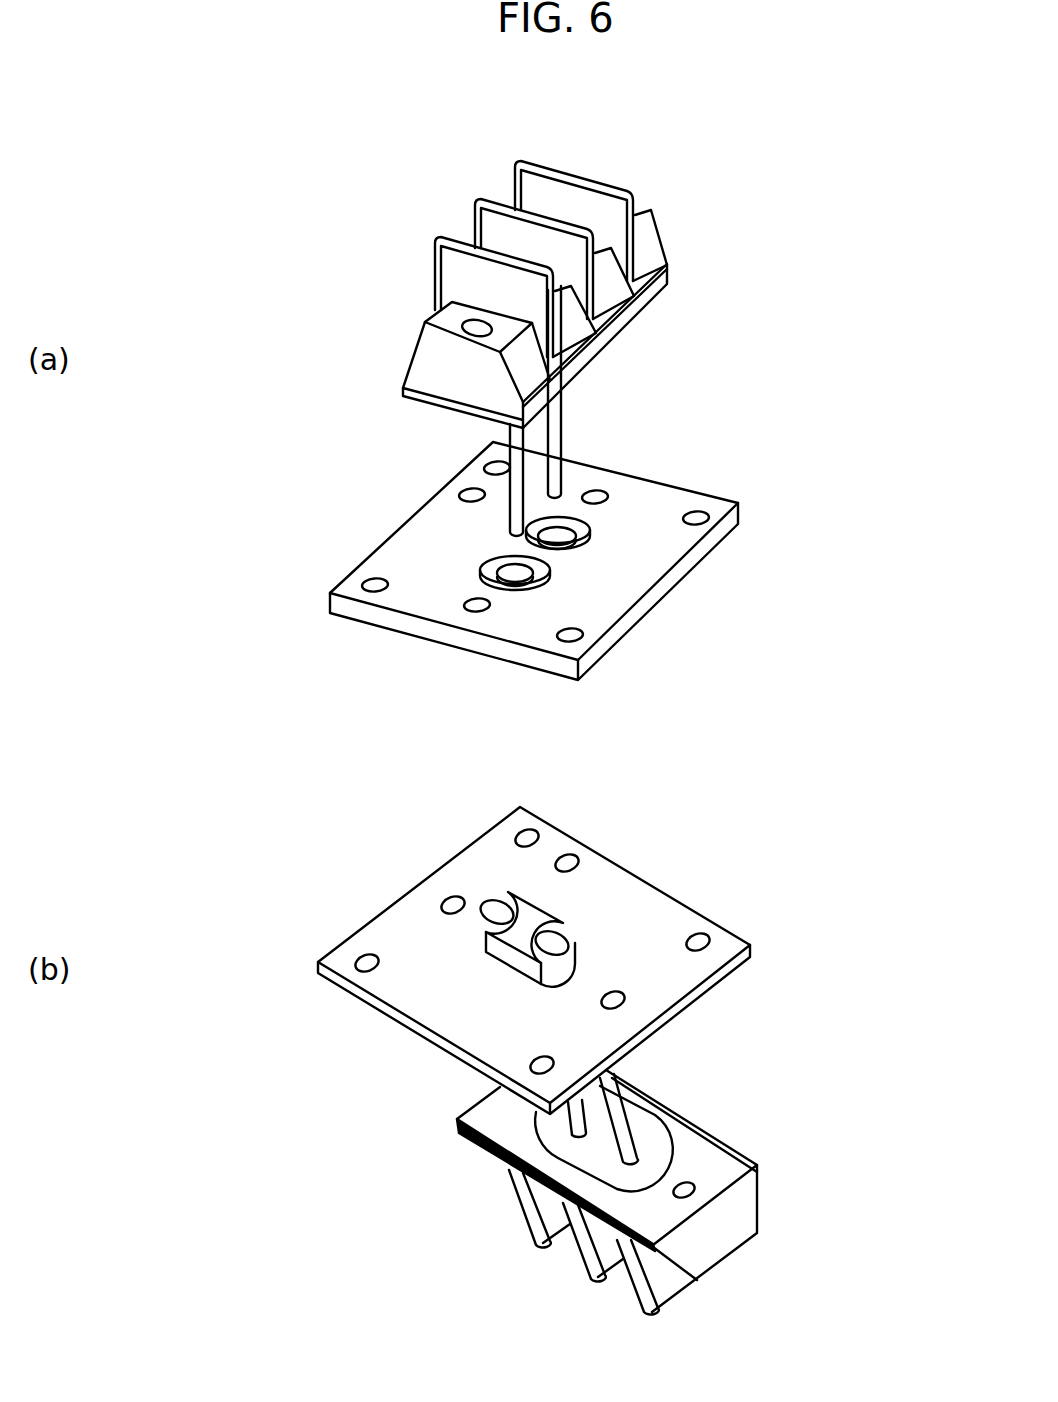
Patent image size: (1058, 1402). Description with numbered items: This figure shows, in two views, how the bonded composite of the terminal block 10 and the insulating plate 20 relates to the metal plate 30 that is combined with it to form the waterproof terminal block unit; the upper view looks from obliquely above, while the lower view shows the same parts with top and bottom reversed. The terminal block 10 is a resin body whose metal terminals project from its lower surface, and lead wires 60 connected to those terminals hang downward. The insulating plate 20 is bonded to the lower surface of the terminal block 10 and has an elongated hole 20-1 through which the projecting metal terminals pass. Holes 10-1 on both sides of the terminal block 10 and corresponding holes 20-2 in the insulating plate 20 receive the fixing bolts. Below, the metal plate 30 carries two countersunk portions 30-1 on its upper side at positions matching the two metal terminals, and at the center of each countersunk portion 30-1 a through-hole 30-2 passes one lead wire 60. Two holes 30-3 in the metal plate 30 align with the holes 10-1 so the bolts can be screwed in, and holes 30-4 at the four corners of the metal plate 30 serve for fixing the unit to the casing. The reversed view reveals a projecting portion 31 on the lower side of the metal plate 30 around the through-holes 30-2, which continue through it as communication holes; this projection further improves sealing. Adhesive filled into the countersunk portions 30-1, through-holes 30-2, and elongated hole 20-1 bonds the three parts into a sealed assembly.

The terminal block 10 is at (673, 242).
The holes 10-1 is at (422, 333).
The insulating plate 20 is at (640, 325).
The elongated hole 20-1 is at (597, 1157).
The holes 20-2 is at (697, 1192).
The metal plate 30 is at (478, 542).
The countersunk portions 30-1 is at (552, 575).
The through-holes 30-2 is at (495, 576).
The holes 30-3 is at (477, 611).
The holes 30-4 is at (362, 584).
The projecting portion 31 is at (496, 912).
The lead wires 60 is at (564, 427).